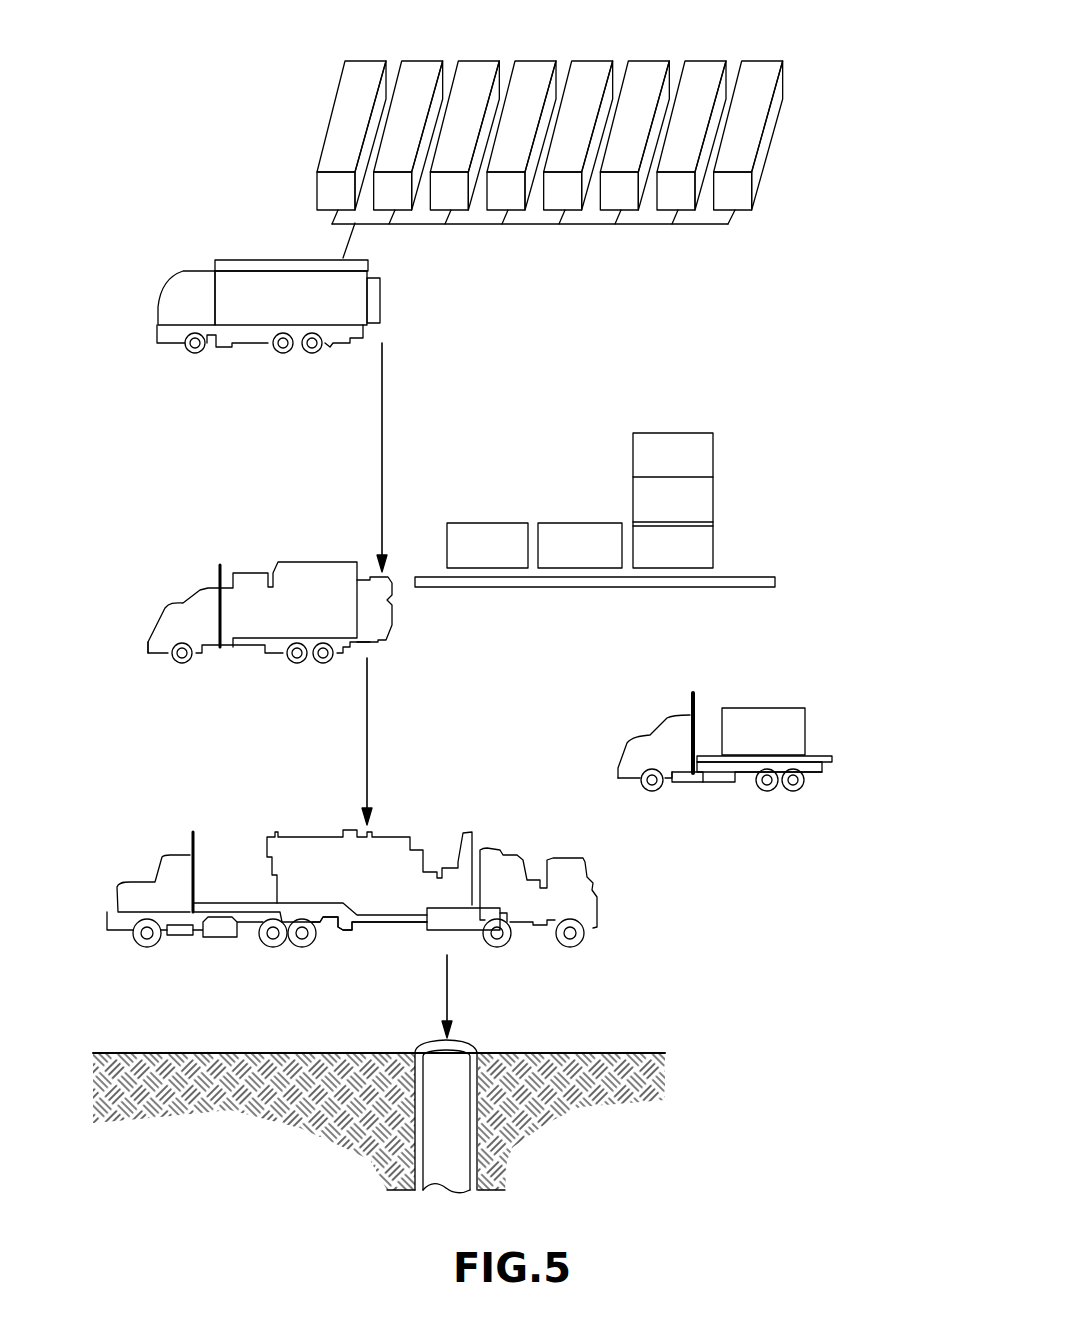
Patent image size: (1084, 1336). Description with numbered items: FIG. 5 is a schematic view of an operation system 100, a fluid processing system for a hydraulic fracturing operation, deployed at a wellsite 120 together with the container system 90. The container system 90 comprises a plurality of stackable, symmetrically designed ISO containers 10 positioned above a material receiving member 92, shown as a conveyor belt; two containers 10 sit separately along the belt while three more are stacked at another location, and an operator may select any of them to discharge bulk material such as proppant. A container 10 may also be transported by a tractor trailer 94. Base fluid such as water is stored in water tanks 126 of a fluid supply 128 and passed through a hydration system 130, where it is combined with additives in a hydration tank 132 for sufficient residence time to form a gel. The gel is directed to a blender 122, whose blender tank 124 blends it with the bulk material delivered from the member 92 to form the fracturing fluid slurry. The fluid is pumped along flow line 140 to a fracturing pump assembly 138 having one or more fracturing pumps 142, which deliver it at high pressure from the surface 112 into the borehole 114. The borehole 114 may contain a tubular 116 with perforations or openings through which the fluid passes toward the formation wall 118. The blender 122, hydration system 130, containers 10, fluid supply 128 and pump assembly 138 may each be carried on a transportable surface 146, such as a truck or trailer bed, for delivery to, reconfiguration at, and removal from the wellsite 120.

The container 10 is at (488, 523).
The container system 90 is at (740, 490).
The material receiving member 92 is at (572, 587).
The tractor trailer 94 is at (650, 737).
The operation system 100 is at (170, 178).
The surface 112 is at (262, 1053).
The borehole 114 is at (437, 1150).
The tubular 116 is at (480, 1153).
The formation wall 118 is at (477, 1120).
The wellsite 120 is at (872, 320).
The blender 122 is at (210, 587).
The blender tank 124 is at (388, 578).
The water tank 126 is at (367, 61).
The fluid supply 128 is at (778, 137).
The hydration system 130 is at (170, 308).
The hydration tank 132 is at (292, 260).
The fracturing pump assembly 138 is at (133, 882).
The flow line 140 is at (367, 743).
The fracturing pump 142 is at (383, 837).
The transportable surface 146 is at (197, 353).